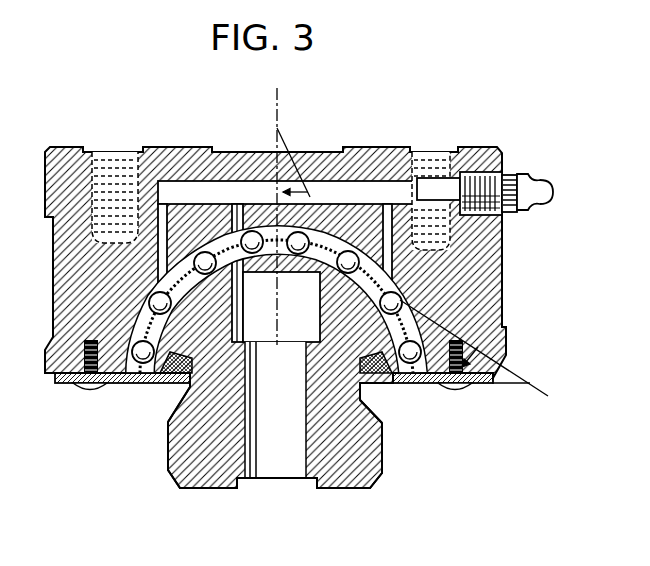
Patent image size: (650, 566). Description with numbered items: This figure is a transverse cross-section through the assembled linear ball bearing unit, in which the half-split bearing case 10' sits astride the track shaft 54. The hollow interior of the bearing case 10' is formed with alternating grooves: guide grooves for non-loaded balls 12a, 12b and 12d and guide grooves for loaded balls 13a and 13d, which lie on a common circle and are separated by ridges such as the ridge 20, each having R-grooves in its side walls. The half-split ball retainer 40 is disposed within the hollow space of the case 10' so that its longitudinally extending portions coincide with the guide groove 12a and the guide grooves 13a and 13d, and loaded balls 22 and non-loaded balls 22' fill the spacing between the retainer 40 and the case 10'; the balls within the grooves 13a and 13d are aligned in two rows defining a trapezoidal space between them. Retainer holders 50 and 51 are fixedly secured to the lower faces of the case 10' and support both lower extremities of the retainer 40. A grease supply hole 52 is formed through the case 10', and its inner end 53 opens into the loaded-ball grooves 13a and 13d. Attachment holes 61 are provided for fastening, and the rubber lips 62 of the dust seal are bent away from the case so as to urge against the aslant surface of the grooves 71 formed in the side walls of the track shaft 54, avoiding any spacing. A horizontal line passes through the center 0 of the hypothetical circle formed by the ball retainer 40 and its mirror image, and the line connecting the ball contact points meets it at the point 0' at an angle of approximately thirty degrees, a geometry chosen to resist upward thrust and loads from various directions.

The half-split bearing case 10' is at (275, 292).
The inner end of grease supply hole 53 is at (280, 175).
The attachment holes 61 is at (100, 152).
The grease supply hole 52 is at (478, 172).
The ridge 20 is at (200, 250).
The ball retainer unit 40 is at (300, 257).
The guide groove for loaded balls 13d is at (166, 286).
The guide groove for loaded balls 13a is at (398, 275).
The loaded balls 22 is at (305, 279).
The non-loaded balls 22' is at (288, 297).
The rubber lips 62 is at (173, 348).
The guide groove for non-loaded balls 12d is at (133, 385).
The guide groove for non-loaded balls 12b is at (418, 387).
The retainer holder 50 is at (76, 385).
The retainer holder 51 is at (456, 385).
The groove in side wall of track shaft 71 is at (190, 388).
The track shaft 54 is at (345, 480).
The guide groove for non-loaded balls 12a is at (272, 228).
The center of hypothetical circle 0 is at (306, 216).
The point o' 0' is at (474, 348).